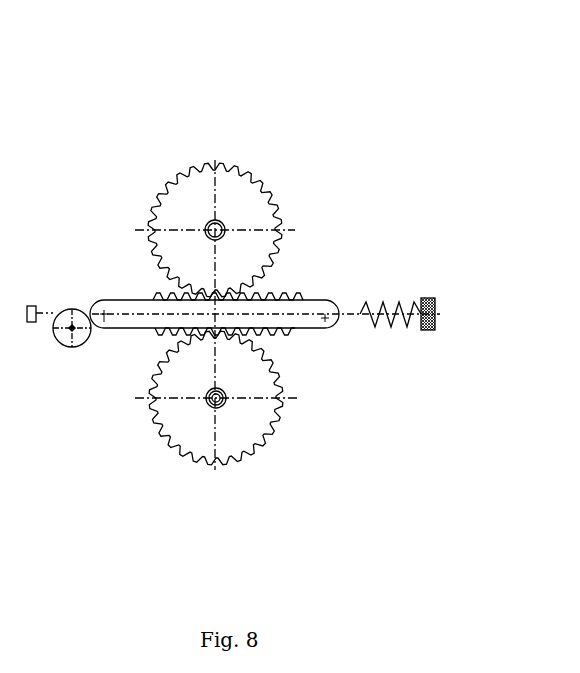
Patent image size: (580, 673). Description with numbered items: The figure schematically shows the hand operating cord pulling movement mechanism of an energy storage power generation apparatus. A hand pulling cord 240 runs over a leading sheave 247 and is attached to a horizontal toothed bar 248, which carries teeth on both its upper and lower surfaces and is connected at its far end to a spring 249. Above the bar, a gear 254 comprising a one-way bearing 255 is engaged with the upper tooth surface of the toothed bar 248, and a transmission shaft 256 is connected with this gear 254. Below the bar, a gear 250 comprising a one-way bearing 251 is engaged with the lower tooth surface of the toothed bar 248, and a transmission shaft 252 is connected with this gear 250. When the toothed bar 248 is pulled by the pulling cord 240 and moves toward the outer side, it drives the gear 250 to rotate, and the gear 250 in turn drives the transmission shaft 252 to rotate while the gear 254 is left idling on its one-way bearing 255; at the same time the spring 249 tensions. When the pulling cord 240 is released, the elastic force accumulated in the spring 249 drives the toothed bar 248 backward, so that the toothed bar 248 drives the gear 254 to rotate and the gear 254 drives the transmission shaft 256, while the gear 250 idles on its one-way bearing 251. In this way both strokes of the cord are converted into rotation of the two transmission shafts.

The hand pulling cord 240 is at (31, 306).
The leading sheave 247 is at (85, 312).
The toothed bar 248 is at (113, 300).
The spring 249 is at (405, 307).
The gear 250 is at (239, 430).
The one-way bearing 251 is at (208, 407).
The transmission shaft 252 is at (221, 408).
The gear 254 is at (245, 207).
The one-way bearing 255 is at (211, 220).
The transmission shaft 256 is at (222, 221).